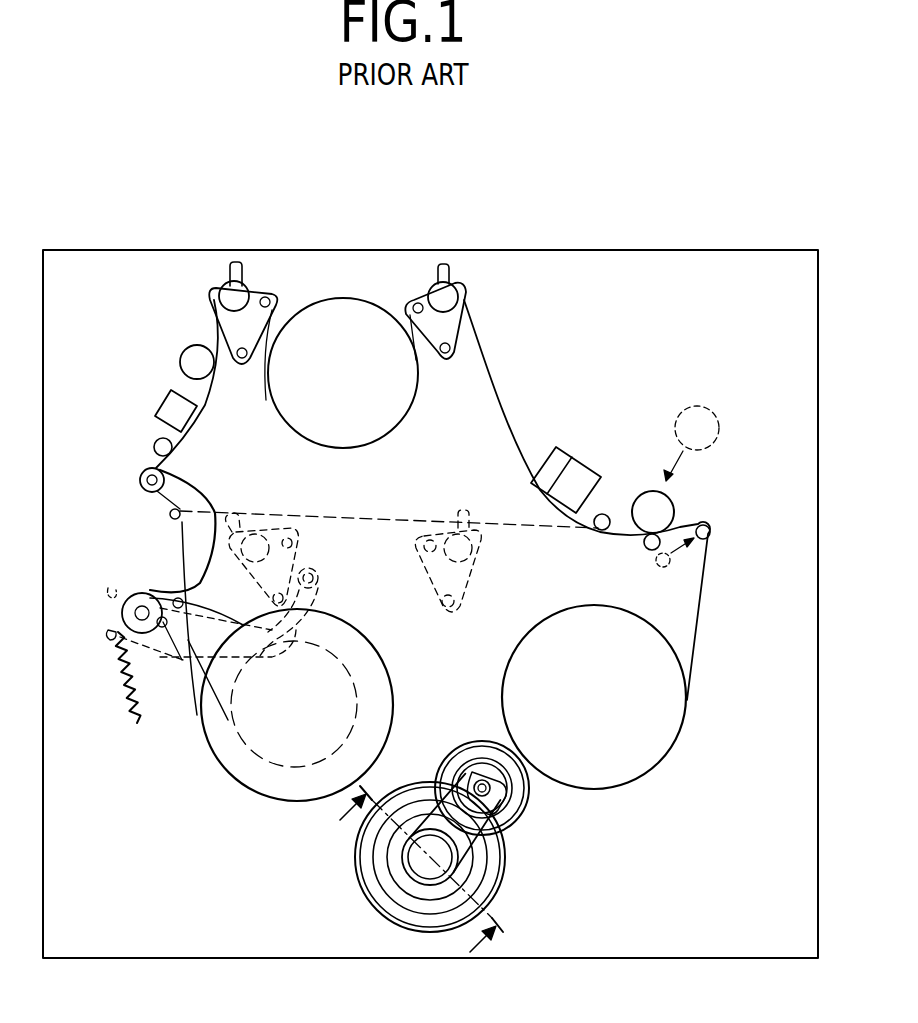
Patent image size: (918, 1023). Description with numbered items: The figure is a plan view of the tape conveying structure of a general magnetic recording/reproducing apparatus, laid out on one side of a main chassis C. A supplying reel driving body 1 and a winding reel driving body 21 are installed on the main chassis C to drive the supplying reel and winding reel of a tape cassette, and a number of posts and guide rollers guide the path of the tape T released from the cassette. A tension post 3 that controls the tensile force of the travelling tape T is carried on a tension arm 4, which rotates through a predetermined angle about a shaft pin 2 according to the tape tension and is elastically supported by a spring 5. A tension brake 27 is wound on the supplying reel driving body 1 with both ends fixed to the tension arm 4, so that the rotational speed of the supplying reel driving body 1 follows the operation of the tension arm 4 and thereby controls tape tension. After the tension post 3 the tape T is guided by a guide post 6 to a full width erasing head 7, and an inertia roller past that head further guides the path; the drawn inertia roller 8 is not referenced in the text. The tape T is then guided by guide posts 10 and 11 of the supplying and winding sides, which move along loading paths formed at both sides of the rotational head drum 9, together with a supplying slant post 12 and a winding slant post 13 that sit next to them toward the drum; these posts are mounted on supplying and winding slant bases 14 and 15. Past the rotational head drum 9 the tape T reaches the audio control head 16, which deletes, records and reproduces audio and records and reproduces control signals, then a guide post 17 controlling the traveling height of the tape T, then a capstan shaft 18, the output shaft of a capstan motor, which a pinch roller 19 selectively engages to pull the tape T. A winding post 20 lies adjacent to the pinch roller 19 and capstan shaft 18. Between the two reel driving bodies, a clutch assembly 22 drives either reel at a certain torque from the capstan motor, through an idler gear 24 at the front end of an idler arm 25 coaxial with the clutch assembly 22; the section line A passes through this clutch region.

The supplying reel driving body 1 is at (262, 782).
The shaft pin 2 is at (138, 613).
The tension post 3 is at (142, 480).
The tension arm 4 is at (172, 515).
The spring 5 is at (122, 672).
The guide post 6 is at (158, 442).
The full width erasing head 7 is at (170, 398).
The impedance roller 8 is at (194, 360).
The rotational head drum 9 is at (338, 315).
The guide post 10 is at (232, 295).
The guide post 11 is at (445, 297).
The supplying slant post 12 is at (275, 292).
The winding slant post 13 is at (418, 305).
The supplying slant base 14 is at (215, 310).
The winding slant base 15 is at (462, 320).
The audio control head 16 is at (567, 460).
The guide post 17 is at (606, 515).
The capstan shaft 18 is at (650, 552).
The pinch roller 19 is at (662, 508).
The winding post 20 is at (712, 530).
The winding reel driving body 21 is at (655, 745).
The clutch assembly 22 is at (490, 878).
The idler gear 24 is at (478, 752).
The idler arm 25 is at (512, 810).
The tension brake 27 is at (213, 702).
The tape T is at (183, 537).
The section line A- A is at (416, 876).
The main chassis C is at (818, 665).